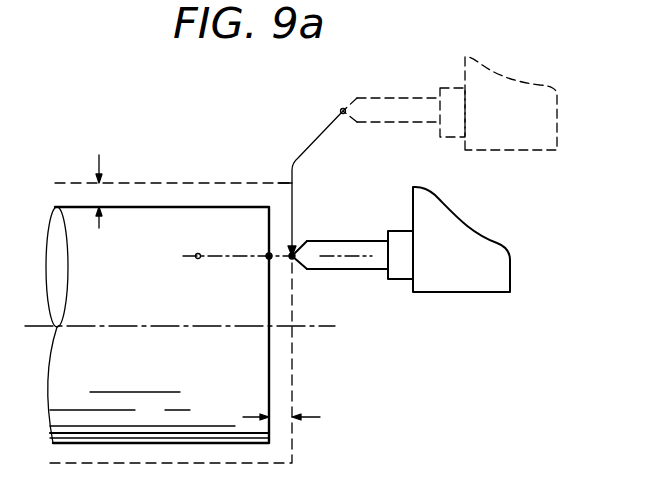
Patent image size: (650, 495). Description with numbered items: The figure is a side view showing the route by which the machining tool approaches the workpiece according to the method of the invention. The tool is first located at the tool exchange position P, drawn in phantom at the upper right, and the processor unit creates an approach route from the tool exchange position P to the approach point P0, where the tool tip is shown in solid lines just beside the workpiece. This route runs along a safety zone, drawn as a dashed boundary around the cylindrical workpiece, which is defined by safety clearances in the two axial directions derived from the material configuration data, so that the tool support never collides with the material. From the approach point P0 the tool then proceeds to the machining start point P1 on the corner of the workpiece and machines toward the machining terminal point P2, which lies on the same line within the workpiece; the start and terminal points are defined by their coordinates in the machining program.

The tool exchange position P is at (340, 108).
The approach point P0 is at (291, 254).
The machining start point P1 is at (267, 254).
The machining terminal point P2 is at (198, 254).